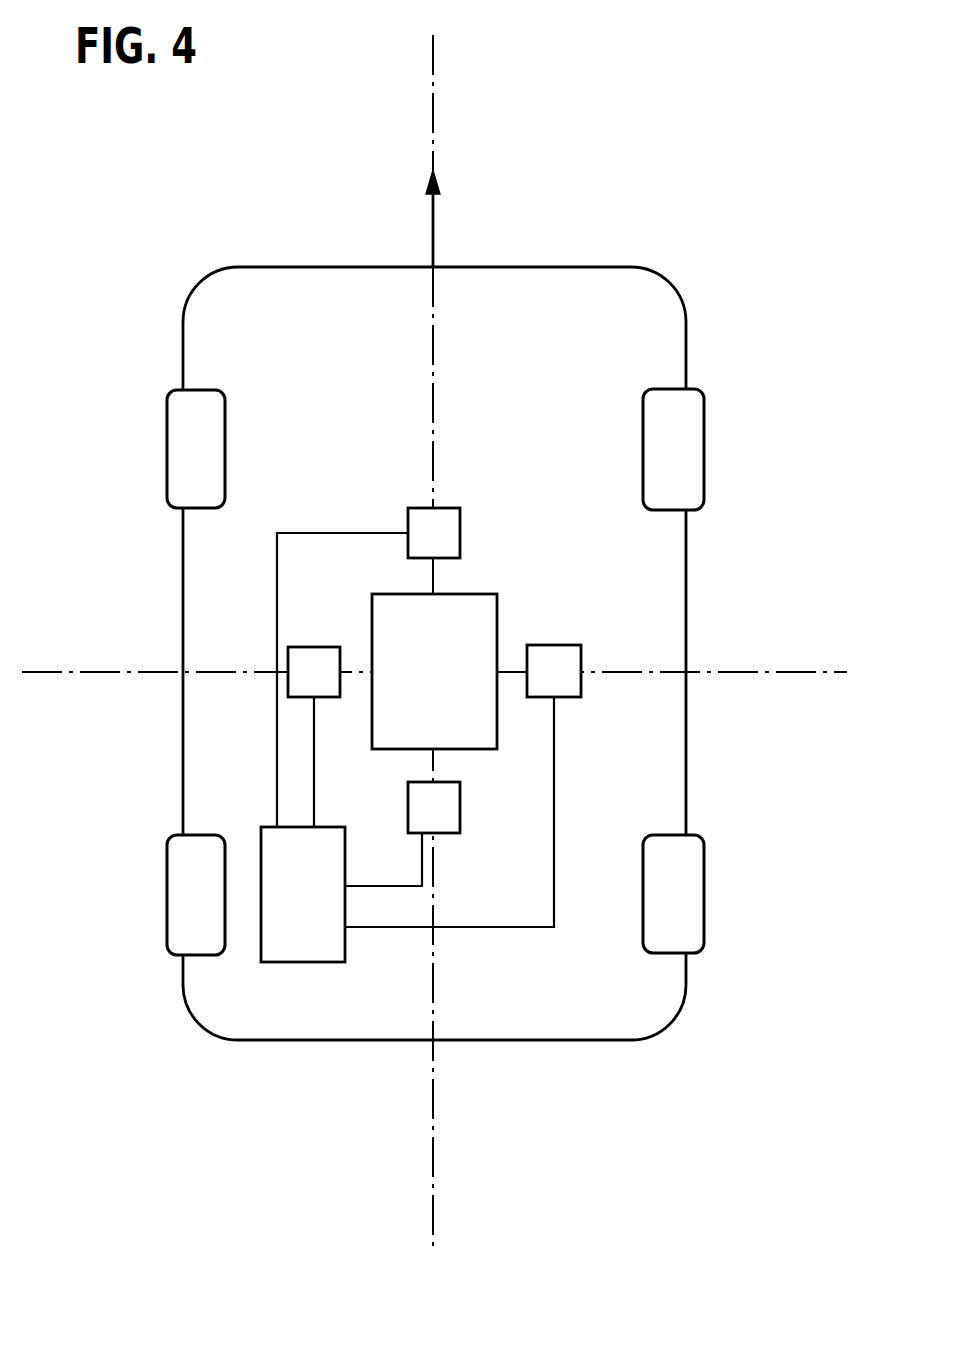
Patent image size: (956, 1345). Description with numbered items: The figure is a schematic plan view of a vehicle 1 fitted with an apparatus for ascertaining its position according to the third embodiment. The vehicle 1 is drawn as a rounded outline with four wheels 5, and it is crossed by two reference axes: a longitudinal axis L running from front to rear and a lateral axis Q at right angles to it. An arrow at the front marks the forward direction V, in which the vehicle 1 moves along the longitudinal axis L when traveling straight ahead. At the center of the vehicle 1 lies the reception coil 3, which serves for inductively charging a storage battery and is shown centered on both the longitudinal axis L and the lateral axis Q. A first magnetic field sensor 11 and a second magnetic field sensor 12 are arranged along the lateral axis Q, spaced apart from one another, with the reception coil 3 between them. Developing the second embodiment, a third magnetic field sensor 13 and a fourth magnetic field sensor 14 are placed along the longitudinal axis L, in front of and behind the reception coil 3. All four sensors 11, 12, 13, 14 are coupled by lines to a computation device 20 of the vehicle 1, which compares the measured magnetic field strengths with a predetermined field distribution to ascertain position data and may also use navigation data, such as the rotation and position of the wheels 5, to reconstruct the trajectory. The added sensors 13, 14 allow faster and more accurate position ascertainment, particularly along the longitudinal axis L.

The vehicle 1 is at (686, 352).
The reception coil 3 is at (480, 594).
The wheels 5 is at (167, 451).
The first magnetic field sensor 11 is at (313, 647).
The second magnetic field sensor 12 is at (560, 645).
The third magnetic field sensor 13 is at (452, 508).
The fourth magnetic field sensor 14 is at (442, 833).
The computation device 20 is at (297, 962).
The longitudinal axis L is at (437, 383).
The lateral axis Q is at (815, 672).
The forward direction V is at (436, 218).